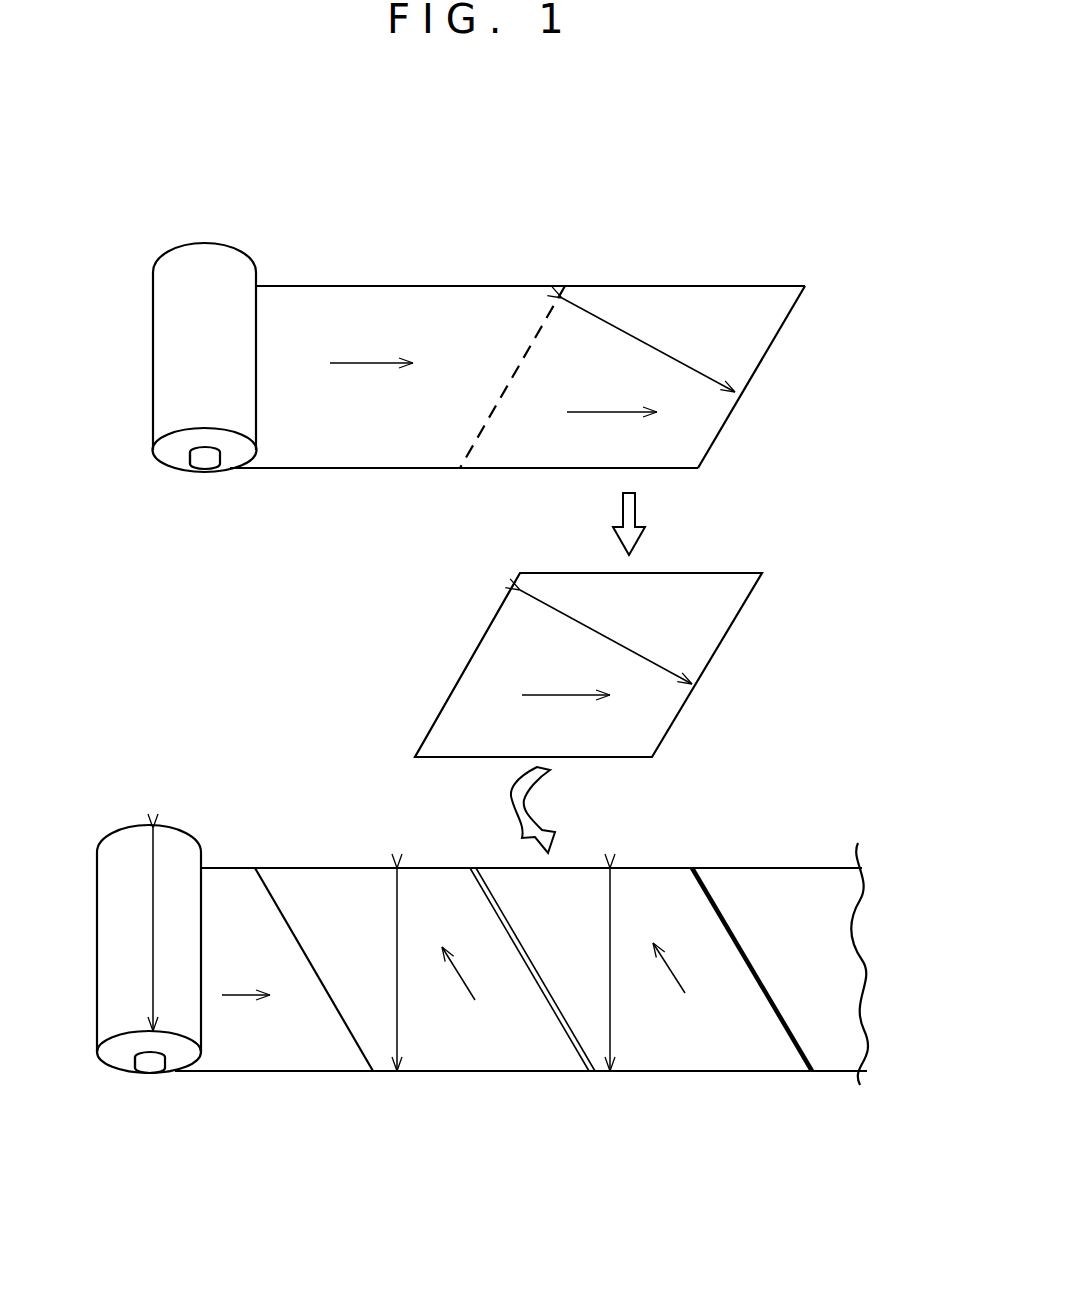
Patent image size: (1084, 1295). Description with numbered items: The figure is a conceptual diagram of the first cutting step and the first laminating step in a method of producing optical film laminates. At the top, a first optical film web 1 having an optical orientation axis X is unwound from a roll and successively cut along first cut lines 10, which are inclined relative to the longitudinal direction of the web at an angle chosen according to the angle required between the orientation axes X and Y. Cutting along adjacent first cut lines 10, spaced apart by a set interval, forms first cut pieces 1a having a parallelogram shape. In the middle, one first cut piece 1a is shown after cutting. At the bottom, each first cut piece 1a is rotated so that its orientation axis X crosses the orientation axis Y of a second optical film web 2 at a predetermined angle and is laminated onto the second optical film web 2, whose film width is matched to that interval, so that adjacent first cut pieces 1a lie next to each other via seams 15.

The first optical film web 1 is at (326, 310).
The first cut line 10 is at (550, 312).
The first cut piece 1a is at (693, 645).
The second optical film web 2 is at (318, 1050).
The seam 15 is at (488, 900).